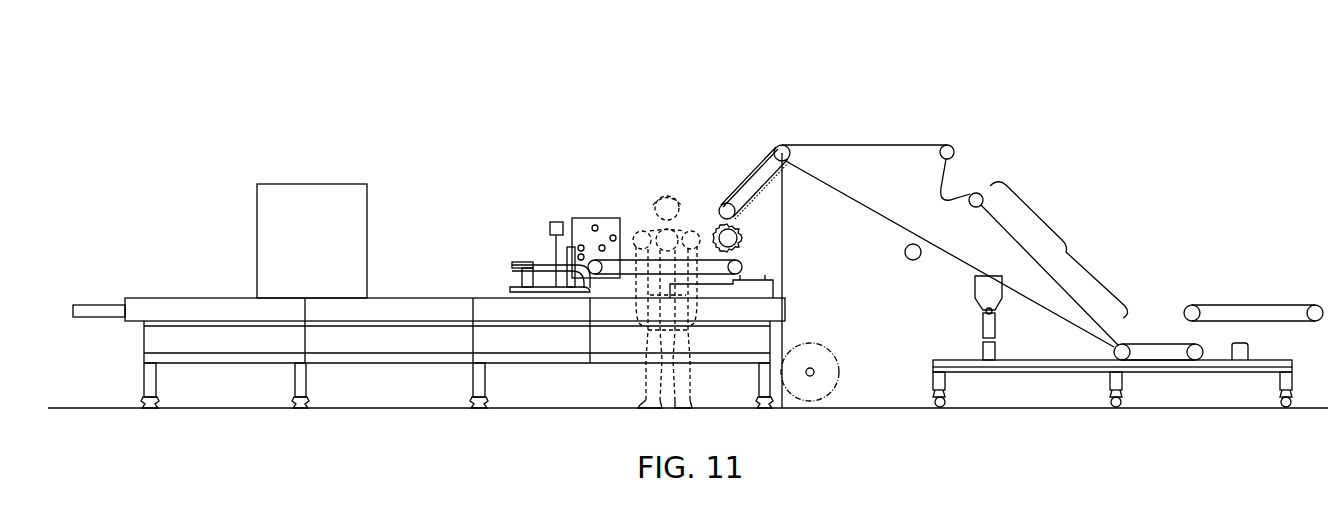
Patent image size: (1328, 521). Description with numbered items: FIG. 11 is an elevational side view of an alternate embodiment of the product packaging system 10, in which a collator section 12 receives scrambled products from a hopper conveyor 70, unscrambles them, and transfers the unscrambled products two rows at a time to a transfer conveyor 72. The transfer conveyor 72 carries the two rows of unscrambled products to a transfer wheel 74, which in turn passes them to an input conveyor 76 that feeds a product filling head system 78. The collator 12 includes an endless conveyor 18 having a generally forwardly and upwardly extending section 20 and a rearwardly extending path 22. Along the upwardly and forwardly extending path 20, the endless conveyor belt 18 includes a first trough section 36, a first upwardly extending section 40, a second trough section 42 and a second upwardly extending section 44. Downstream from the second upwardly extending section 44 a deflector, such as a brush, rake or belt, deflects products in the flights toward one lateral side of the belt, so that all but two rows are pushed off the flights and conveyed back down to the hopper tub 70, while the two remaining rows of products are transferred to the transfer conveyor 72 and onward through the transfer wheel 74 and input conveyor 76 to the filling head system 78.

The product packaging system 10 is at (862, 115).
The collator section 12 is at (1150, 137).
The endless conveyor 18 is at (1018, 235).
The forwardly and upwardly extending section 20 is at (910, 168).
The rearwardly extending path 22 is at (928, 272).
The first trough section 36 is at (1197, 333).
The first upwardly extending section 40 is at (1066, 247).
The second trough section 42 is at (975, 185).
The second upwardly extending section 44 is at (963, 152).
The hopper conveyor 70 is at (1240, 303).
The transfer conveyor 72 is at (772, 148).
The transfer wheel 74 is at (743, 234).
The input conveyor 76 is at (707, 257).
The product filling head system 78 is at (578, 220).